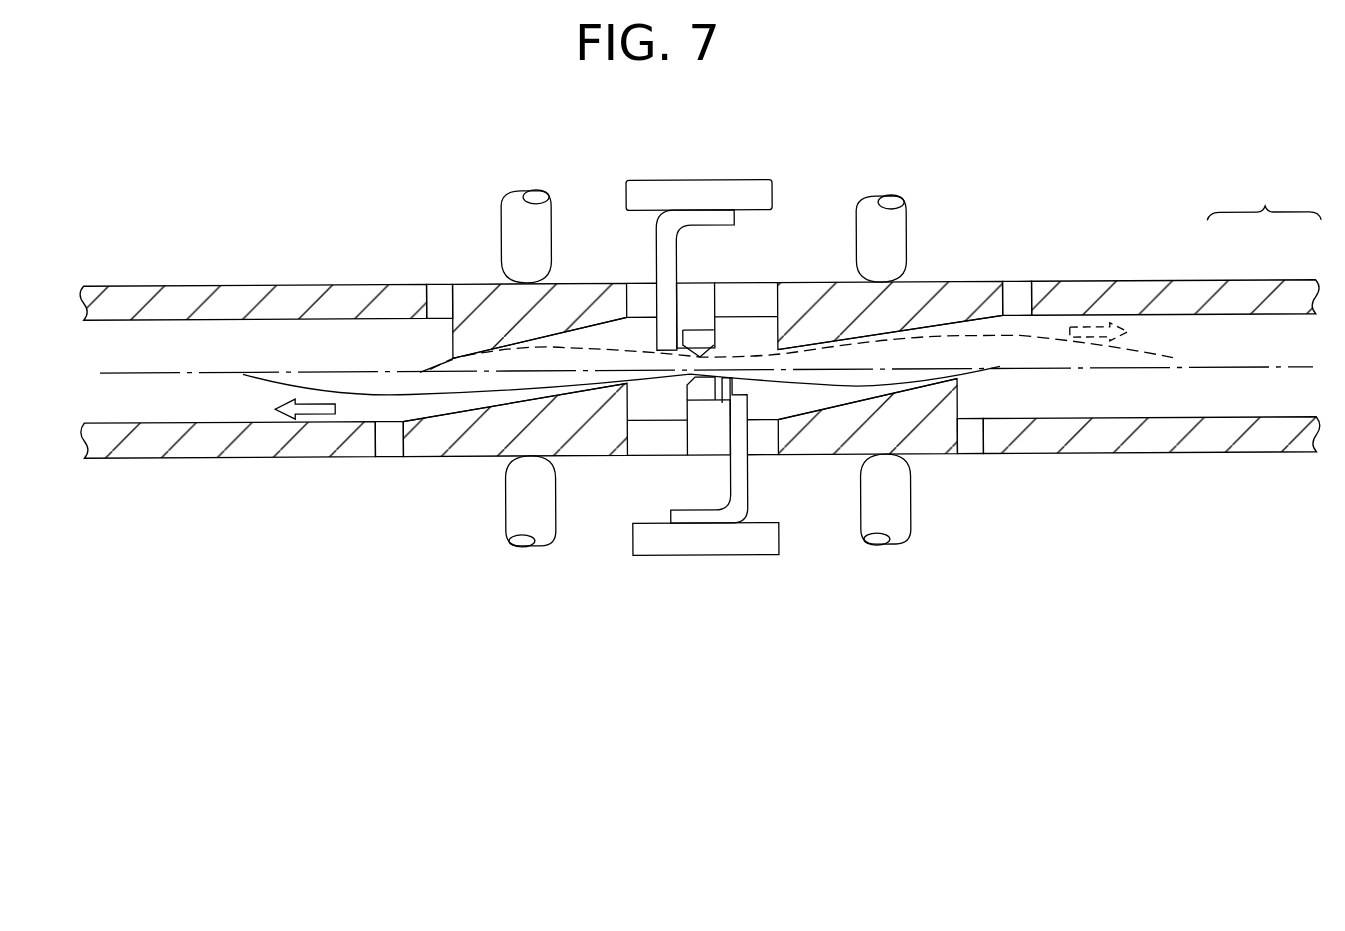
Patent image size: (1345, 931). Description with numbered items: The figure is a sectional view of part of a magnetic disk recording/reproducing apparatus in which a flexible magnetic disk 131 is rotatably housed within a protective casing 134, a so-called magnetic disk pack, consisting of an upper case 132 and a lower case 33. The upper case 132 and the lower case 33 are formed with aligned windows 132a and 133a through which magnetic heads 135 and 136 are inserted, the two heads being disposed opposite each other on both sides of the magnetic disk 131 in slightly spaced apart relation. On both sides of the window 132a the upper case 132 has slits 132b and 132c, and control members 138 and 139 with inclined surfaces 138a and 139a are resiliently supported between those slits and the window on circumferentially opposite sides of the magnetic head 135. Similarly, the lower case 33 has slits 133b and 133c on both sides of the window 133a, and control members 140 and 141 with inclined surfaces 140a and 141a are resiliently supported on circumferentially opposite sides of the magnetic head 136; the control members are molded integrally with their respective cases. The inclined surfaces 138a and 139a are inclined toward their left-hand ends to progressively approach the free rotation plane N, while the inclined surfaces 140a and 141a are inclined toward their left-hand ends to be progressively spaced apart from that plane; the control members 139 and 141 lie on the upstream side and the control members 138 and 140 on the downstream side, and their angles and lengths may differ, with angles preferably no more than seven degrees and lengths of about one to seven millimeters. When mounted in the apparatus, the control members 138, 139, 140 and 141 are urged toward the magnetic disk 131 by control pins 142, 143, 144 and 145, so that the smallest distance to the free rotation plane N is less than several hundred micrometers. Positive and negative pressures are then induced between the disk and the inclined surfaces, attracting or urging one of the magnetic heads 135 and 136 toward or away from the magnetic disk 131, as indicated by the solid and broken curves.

The flexible magnetic disk 131 is at (337, 390).
The upper case 132 is at (1219, 290).
The lower guide plate 33 is at (1264, 420).
The protective casing 134 is at (1264, 200).
The window 132a is at (643, 288).
The slit 132b is at (436, 290).
The slit 132c is at (1022, 284).
The window 133a is at (762, 442).
The slit 133b is at (386, 456).
The slit 133c is at (974, 445).
The magnetic head 135 is at (713, 340).
The magnetic head 136 is at (686, 395).
The control member 138 is at (463, 290).
The inclined surface 138a is at (597, 325).
The control member 139 is at (984, 287).
The inclined surface 139a is at (935, 325).
The control member 140 is at (490, 456).
The inclined surface 140a is at (452, 408).
The control member 141 is at (933, 440).
The inclined surface 141a is at (836, 402).
The control pin 142 is at (521, 205).
The control pin 143 is at (876, 207).
The control pin 144 is at (535, 537).
The control pin 145 is at (882, 520).
The free rotation plane N is at (1222, 365).